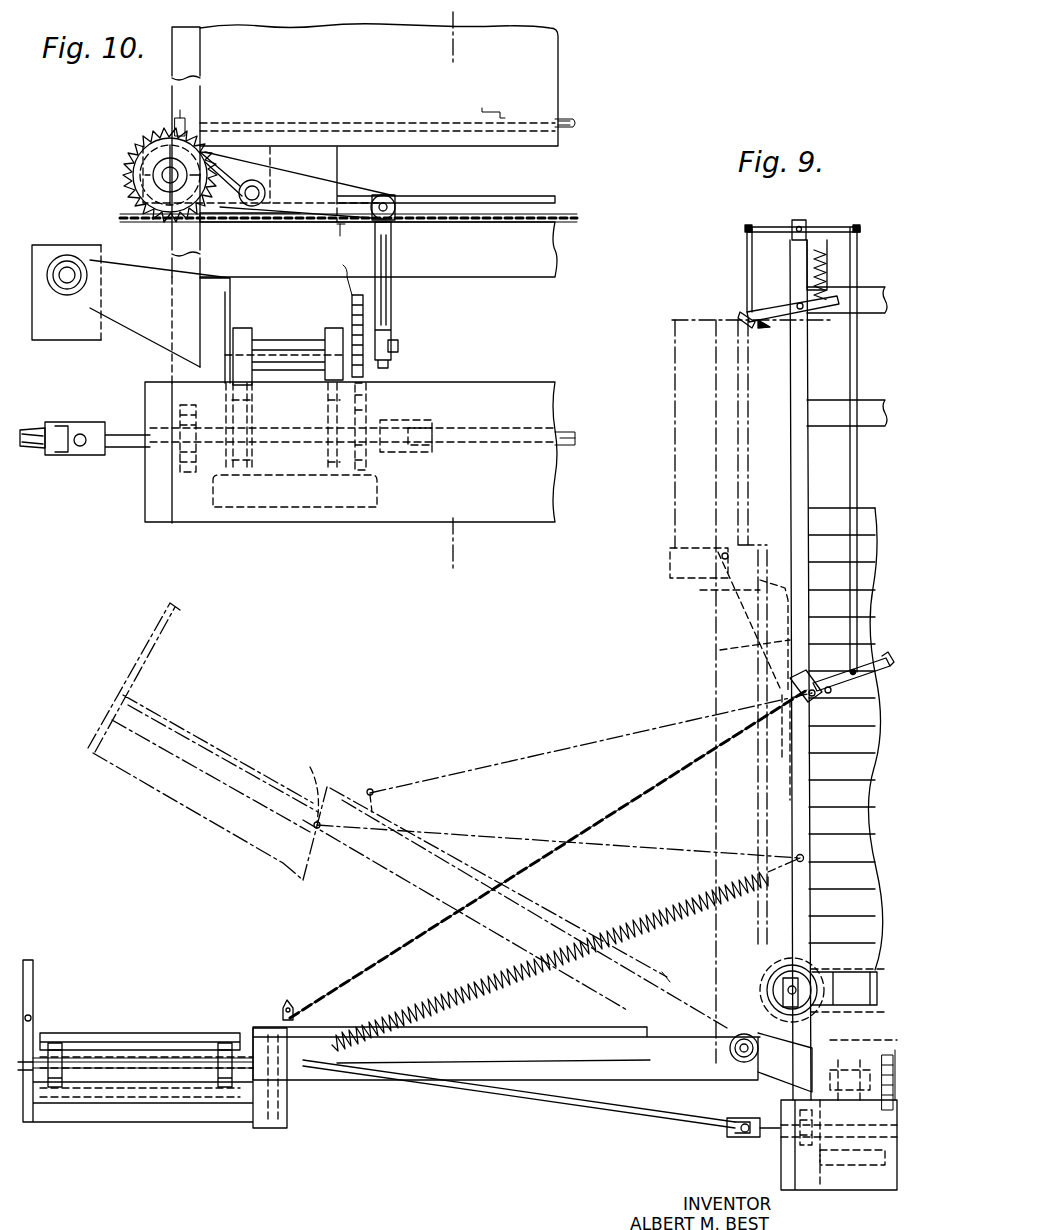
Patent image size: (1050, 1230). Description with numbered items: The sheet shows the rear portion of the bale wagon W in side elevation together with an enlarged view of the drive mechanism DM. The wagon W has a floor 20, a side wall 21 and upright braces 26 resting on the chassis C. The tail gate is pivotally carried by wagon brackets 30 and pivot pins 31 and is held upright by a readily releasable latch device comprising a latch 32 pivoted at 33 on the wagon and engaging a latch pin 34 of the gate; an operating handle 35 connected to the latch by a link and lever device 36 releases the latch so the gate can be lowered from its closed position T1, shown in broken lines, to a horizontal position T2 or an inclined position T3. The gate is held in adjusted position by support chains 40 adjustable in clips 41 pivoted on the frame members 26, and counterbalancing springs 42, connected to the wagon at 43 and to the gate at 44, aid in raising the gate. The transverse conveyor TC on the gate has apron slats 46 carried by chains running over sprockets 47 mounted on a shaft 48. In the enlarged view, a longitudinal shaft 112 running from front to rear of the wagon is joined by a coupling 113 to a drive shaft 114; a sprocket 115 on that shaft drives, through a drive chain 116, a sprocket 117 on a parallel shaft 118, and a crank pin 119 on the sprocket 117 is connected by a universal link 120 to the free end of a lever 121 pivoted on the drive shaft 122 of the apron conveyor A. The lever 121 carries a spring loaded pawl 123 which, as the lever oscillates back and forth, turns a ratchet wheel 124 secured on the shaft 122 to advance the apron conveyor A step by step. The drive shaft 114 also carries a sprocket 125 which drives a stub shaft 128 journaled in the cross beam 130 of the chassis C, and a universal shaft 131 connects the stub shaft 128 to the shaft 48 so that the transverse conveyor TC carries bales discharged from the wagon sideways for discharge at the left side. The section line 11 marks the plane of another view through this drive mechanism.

In FIG. 10, the section line 11 is at (425, 38).
In FIG. 9, the floor 20 is at (856, 992).
In FIG. 9, the side wall 21 is at (847, 628).
In FIG. 9, the upright braces 26 is at (790, 480).
In FIG. 10, the wagon brackets 30 is at (137, 328).
In FIG. 9, the wagon brackets 30 is at (775, 1068).
In FIG. 10, the pivot pins 31 is at (70, 265).
In FIG. 9, the pivot pins 31 is at (735, 1040).
In FIG. 9, the latch 32 is at (745, 314).
In FIG. 9, the latch pivot 33 is at (798, 304).
In FIG. 9, the latch pin 34 is at (772, 330).
In FIG. 9, the operating handle 35 is at (882, 680).
In FIG. 9, the link and lever device 36 is at (858, 640).
In FIG. 9, the support chains 40 is at (720, 655).
In FIG. 9, the clips 41 is at (790, 688).
In FIG. 9, the counterbalancing springs 42 is at (700, 595).
In FIG. 9, the spring connection on wagon 43 is at (796, 856).
In FIG. 9, the spring connection on gate 44 is at (668, 556).
In FIG. 9, the apron slats 46 is at (140, 1025).
In FIG. 9, the sprockets 47 is at (225, 1090).
In FIG. 9, the shaft 48 is at (160, 1070).
In FIG. 10, the longitudinal shaft 112 is at (570, 430).
In FIG. 10, the coupling 113 is at (420, 455).
In FIG. 10, the drive shaft 114 is at (390, 420).
In FIG. 10, the sprocket 115 is at (330, 500).
In FIG. 9, the sprocket 115 is at (880, 1165).
In FIG. 10, the drive chain 116 is at (365, 405).
In FIG. 10, the sprocket 117 is at (360, 280).
In FIG. 9, the sprocket 117 is at (886, 1050).
In FIG. 10, the parallel shaft 118 is at (262, 338).
In FIG. 9, the parallel shaft 118 is at (858, 1072).
In FIG. 10, the crank pin 119 is at (398, 345).
In FIG. 9, the crank pin 119 is at (815, 1170).
In FIG. 10, the universal link 120 is at (393, 255).
In FIG. 10, the lever 121 is at (360, 196).
In FIG. 10, the drive shaft of the apron conveyor 122 is at (160, 172).
In FIG. 9, the drive shaft of the apron conveyor 122 is at (790, 992).
In FIG. 10, the spring loaded pawl 123 is at (244, 182).
In FIG. 10, the ratchet wheel 124 is at (135, 128).
In FIG. 10, the sprocket 125 is at (180, 478).
In FIG. 9, the sprocket 125 is at (800, 1145).
In FIG. 10, the stub shaft 128 is at (112, 455).
In FIG. 9, the stub shaft 128 is at (748, 1135).
In FIG. 10, the cross beam 130 is at (150, 523).
In FIG. 10, the universal shaft 131 is at (35, 428).
In FIG. 9, the universal shaft 131 is at (595, 1125).
In FIG. 10, the bale loading and unloading wagon W is at (556, 58).
In FIG. 9, the bale loading and unloading wagon W is at (786, 530).
In FIG. 10, the apron conveyor A is at (570, 116).
In FIG. 9, the apron conveyor A is at (887, 966).
In FIG. 10, the chassis C is at (350, 533).
In FIG. 9, the chassis C is at (778, 1173).
In FIG. 10, the drive mechanism DM is at (400, 330).
In FIG. 9, the closed position of tail gate T1 is at (718, 625).
In FIG. 9, the horizontal position of tail gate T2 is at (575, 1083).
In FIG. 9, the inclined position of tail gate T3 is at (385, 860).
In FIG. 9, the transverse conveyor TC is at (185, 1030).